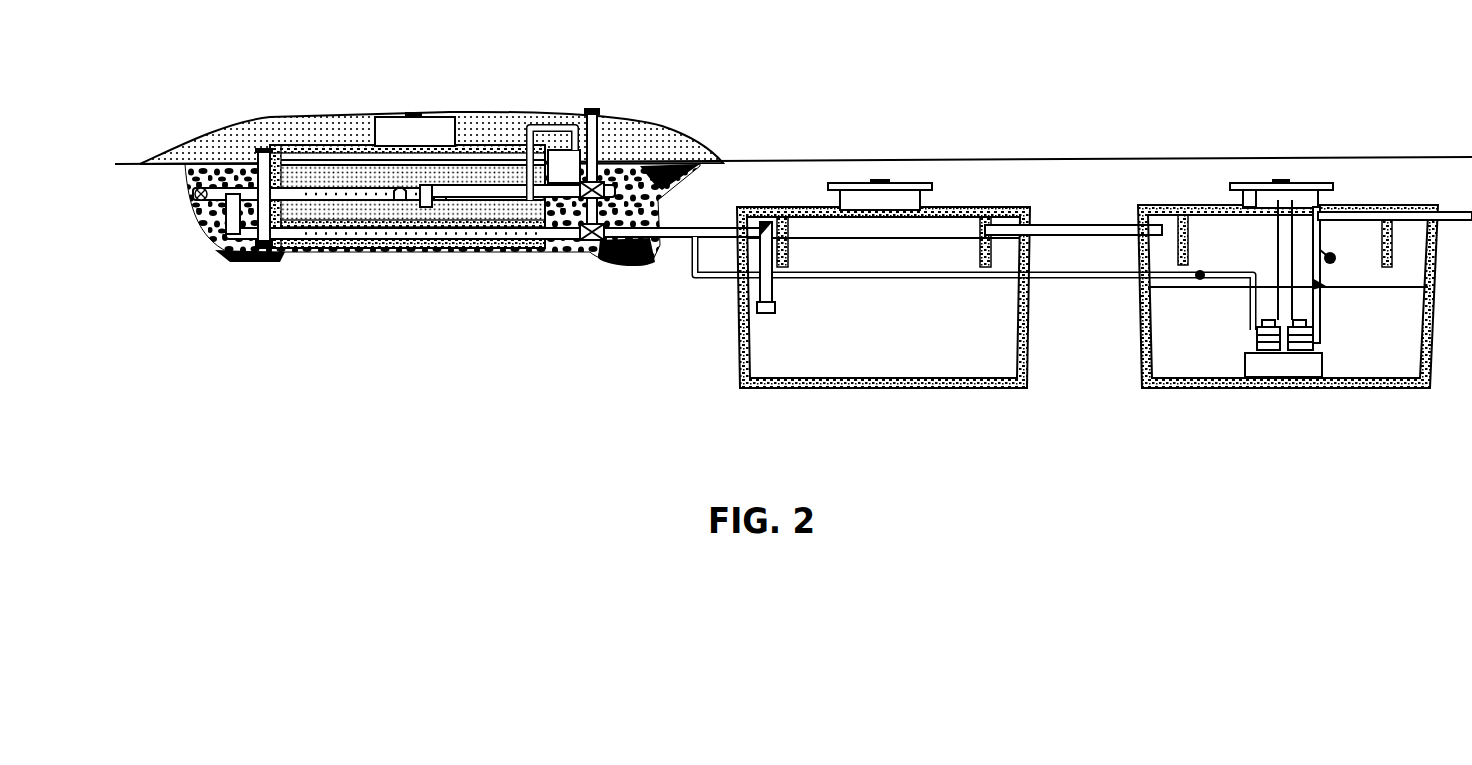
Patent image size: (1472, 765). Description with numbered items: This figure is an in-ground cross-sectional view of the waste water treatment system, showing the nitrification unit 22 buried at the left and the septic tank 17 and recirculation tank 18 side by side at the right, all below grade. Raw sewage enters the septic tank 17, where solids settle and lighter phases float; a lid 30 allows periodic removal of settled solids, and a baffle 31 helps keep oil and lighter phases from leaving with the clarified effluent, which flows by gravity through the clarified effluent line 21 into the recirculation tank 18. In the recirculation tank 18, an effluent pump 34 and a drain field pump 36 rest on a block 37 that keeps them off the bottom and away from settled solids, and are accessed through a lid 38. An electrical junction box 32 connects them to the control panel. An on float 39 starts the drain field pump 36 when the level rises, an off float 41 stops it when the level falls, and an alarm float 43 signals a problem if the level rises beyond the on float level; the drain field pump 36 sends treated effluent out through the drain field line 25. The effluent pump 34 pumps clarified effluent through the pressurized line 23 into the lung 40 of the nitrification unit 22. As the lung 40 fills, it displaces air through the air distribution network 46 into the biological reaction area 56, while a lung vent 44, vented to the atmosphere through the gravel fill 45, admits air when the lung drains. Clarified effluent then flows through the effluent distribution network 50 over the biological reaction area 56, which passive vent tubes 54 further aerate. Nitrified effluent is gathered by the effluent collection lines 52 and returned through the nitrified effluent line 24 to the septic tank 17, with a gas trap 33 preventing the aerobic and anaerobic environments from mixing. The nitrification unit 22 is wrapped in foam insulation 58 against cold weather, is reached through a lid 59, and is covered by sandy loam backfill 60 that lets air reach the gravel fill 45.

The septic tank 17 is at (967, 352).
The recirculation tank 18 is at (1392, 350).
The clarified effluent line 21 is at (1085, 224).
The nitrification unit 22 is at (391, 189).
The pressurized line 23 is at (1075, 283).
The nitrified effluent line 24 is at (720, 224).
The drain field line 25 is at (1440, 210).
The lid 30 is at (852, 183).
The baffle 31 is at (988, 216).
The electrical junction box 32 is at (1250, 188).
The gas trap 33 is at (765, 272).
The effluent pump 34 is at (1262, 355).
The drain field pump 36 is at (1295, 360).
The block 37 is at (1310, 365).
The lid 38 is at (1308, 185).
The on float 39 is at (1338, 254).
The lung 40 is at (520, 210).
The off float 41 is at (1326, 286).
The alarm float 43 is at (1324, 250).
The lung vent 44 is at (548, 126).
The gravel fill 45 is at (622, 168).
The air distribution network 46 is at (455, 235).
The effluent distribution network 50 is at (270, 247).
The effluent collection lines 52 is at (406, 228).
The passive vent tubes 54 is at (320, 200).
The biological reaction area 56 is at (372, 239).
The foam insulation 58 is at (266, 168).
The lid 59 is at (385, 115).
The sandy loam backfill 60 is at (205, 155).